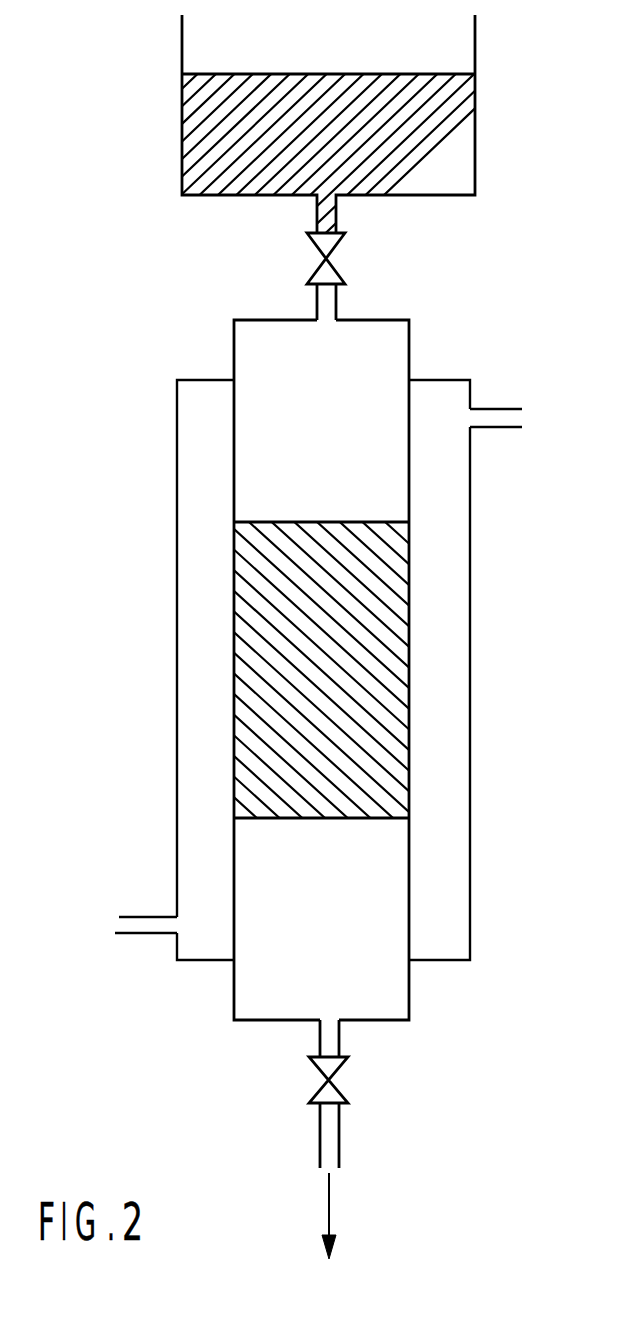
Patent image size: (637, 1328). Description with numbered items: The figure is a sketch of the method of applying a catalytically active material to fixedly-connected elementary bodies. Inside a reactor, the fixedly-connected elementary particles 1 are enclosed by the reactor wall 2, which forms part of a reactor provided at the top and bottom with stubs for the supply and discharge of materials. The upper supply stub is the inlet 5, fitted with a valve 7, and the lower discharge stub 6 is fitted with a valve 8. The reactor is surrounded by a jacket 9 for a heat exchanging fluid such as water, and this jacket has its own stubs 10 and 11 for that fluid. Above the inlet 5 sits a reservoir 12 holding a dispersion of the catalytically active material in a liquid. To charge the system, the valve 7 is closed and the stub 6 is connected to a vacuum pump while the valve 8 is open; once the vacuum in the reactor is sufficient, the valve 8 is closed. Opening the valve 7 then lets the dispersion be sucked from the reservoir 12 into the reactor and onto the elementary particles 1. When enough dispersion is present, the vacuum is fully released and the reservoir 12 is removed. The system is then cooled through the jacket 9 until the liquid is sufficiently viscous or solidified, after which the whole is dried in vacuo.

The fixedly-connected elementary particles 1 is at (411, 602).
The reactor wall 2 is at (411, 650).
The inlet 5 is at (316, 304).
The stub 6 is at (319, 1146).
The valve 7 is at (337, 250).
The valve 8 is at (338, 1070).
The jacket 9 is at (452, 488).
The stub 10 is at (496, 401).
The stub 11 is at (146, 906).
The reservoir 12 is at (477, 143).